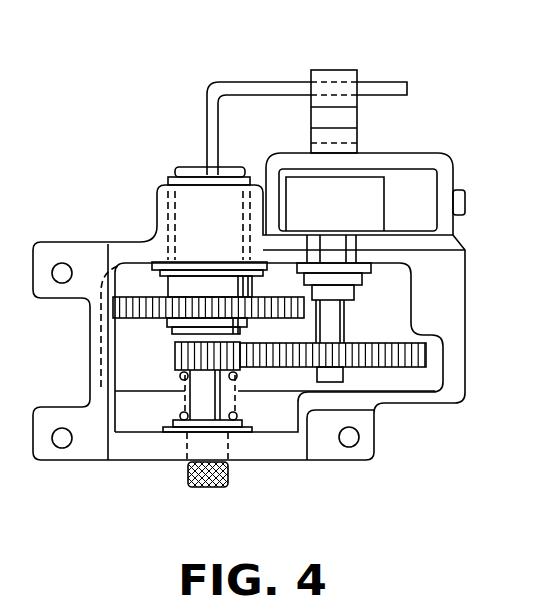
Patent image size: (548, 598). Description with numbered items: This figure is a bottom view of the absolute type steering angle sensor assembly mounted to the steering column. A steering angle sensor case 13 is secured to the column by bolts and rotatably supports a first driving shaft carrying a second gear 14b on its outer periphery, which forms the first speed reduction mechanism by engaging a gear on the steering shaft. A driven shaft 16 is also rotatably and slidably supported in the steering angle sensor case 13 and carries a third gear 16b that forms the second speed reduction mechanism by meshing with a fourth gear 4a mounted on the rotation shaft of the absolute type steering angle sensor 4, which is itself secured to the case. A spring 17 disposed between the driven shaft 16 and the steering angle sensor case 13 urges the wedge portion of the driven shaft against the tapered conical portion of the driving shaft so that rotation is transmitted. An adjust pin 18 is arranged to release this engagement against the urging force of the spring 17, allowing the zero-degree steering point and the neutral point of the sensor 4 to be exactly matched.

The absolute type steering angle sensor 4 is at (392, 191).
The fourth gear 4a is at (426, 356).
The steering angle sensor case 13 is at (465, 296).
The second gear 14b is at (143, 296).
The driven shaft 16 is at (224, 484).
The third gear 16b is at (176, 352).
The spring 17 is at (184, 417).
The adjust pin 18 is at (248, 78).